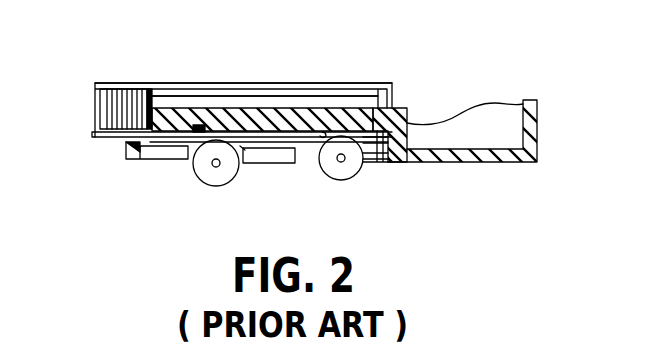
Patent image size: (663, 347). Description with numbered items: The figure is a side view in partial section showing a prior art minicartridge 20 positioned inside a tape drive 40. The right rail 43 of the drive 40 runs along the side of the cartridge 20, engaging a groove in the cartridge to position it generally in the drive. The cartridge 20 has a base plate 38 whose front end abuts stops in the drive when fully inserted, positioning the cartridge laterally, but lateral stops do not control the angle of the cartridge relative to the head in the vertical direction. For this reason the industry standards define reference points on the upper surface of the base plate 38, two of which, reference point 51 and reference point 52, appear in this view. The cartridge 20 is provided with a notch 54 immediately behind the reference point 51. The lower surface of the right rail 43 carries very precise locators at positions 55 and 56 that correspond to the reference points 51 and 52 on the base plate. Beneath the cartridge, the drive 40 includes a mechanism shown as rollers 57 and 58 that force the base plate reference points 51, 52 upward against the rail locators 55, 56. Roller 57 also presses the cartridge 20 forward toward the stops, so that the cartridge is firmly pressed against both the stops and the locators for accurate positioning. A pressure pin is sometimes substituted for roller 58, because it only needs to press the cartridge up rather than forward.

The cartridge 20 is at (134, 83).
The base plate 38 is at (93, 132).
The tape drive 40 is at (541, 112).
The right rail 43 is at (323, 105).
The reference point 51 is at (372, 100).
The reference point 52 is at (194, 135).
The notch 54 is at (322, 134).
The rail locator 55 is at (385, 140).
The rail locator 56 is at (194, 135).
The roller 57 is at (352, 172).
The roller 58 is at (217, 178).